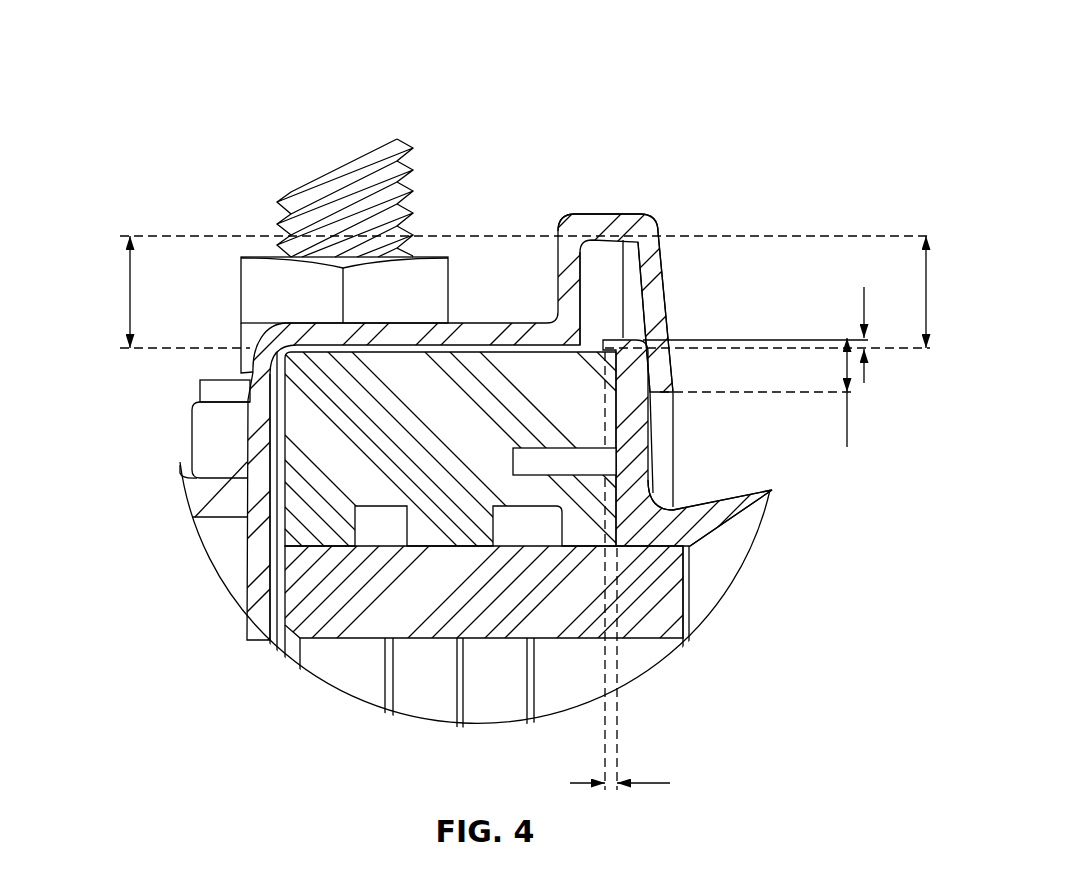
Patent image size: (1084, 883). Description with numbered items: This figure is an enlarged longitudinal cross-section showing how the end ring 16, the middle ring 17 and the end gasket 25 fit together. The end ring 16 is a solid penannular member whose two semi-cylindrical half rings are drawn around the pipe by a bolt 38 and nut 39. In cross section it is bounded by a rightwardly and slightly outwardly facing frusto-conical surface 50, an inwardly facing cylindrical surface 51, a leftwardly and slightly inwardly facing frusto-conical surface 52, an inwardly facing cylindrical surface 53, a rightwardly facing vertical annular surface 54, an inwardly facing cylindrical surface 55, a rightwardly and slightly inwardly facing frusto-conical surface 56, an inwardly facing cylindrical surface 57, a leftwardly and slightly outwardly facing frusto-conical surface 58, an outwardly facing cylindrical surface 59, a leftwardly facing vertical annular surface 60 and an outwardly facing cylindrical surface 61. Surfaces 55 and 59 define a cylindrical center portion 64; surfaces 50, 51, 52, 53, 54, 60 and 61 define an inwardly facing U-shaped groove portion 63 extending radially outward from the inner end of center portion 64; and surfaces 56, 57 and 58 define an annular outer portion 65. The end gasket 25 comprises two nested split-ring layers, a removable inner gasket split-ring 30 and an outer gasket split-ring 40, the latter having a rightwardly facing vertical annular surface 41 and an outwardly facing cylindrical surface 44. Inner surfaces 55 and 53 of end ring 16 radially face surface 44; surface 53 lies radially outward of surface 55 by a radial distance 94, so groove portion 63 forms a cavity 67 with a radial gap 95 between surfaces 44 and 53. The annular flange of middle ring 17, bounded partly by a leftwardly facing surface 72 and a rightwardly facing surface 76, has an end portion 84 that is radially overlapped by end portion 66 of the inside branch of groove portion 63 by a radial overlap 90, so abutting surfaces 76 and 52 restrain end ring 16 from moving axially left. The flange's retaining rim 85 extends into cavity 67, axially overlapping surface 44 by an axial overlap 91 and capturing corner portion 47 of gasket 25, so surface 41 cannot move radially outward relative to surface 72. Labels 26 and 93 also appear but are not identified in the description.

The end ring 16 is at (500, 170).
The middle ring 17 is at (762, 520).
The end gasket 25 is at (427, 672).
The housing wall 26 is at (268, 575).
The inner gasket split-ring 30 is at (403, 607).
The bolt 38 is at (305, 175).
The nut 39 is at (238, 257).
The outer gasket split-ring 40 is at (343, 474).
The rightwardly-facing vertical annular surface 41 is at (625, 548).
The outwardly-facing horizontal cylindrical surface 44 is at (600, 338).
The corner portion 47 is at (607, 357).
The frusto-conical surface 50 is at (668, 342).
The inwardly-facing horizontal cylindrical surface 51 is at (673, 405).
The frusto-conical surface 52 is at (632, 300).
The inwardly-facing horizontal cylindrical surface 53 is at (578, 243).
The rightwardly-facing vertical annular surface 54 is at (660, 233).
The inwardly-facing horizontal cylindrical surface 55 is at (543, 320).
The frusto-conical surface 56 is at (262, 442).
The inwardly-facing horizontal cylindrical surface 57 is at (247, 515).
The frusto-conical surface 58 is at (248, 420).
The outwardly-facing horizontal cylindrical surface 59 is at (470, 323).
The leftwardly-facing vertical annular surface 60 is at (557, 262).
The outwardly-facing horizontal cylindrical surface 61 is at (612, 217).
The groove portion 63 is at (650, 190).
The center portion 64 is at (320, 334).
The annular outer portion 65 is at (258, 443).
The end portion 66 is at (667, 365).
The cavity 67 is at (632, 280).
The leftwardly-facing vertical annular surface 72 is at (615, 428).
The rightwardly-facing vertical annular surface 76 is at (648, 447).
The end portion 84 is at (648, 430).
The retaining rim 85 is at (580, 310).
The radial overlap 90 is at (848, 415).
The axial overlap 91 is at (647, 786).
The dimension 93 is at (864, 308).
The radial distance 94 is at (128, 293).
The radial gap 95 is at (928, 303).